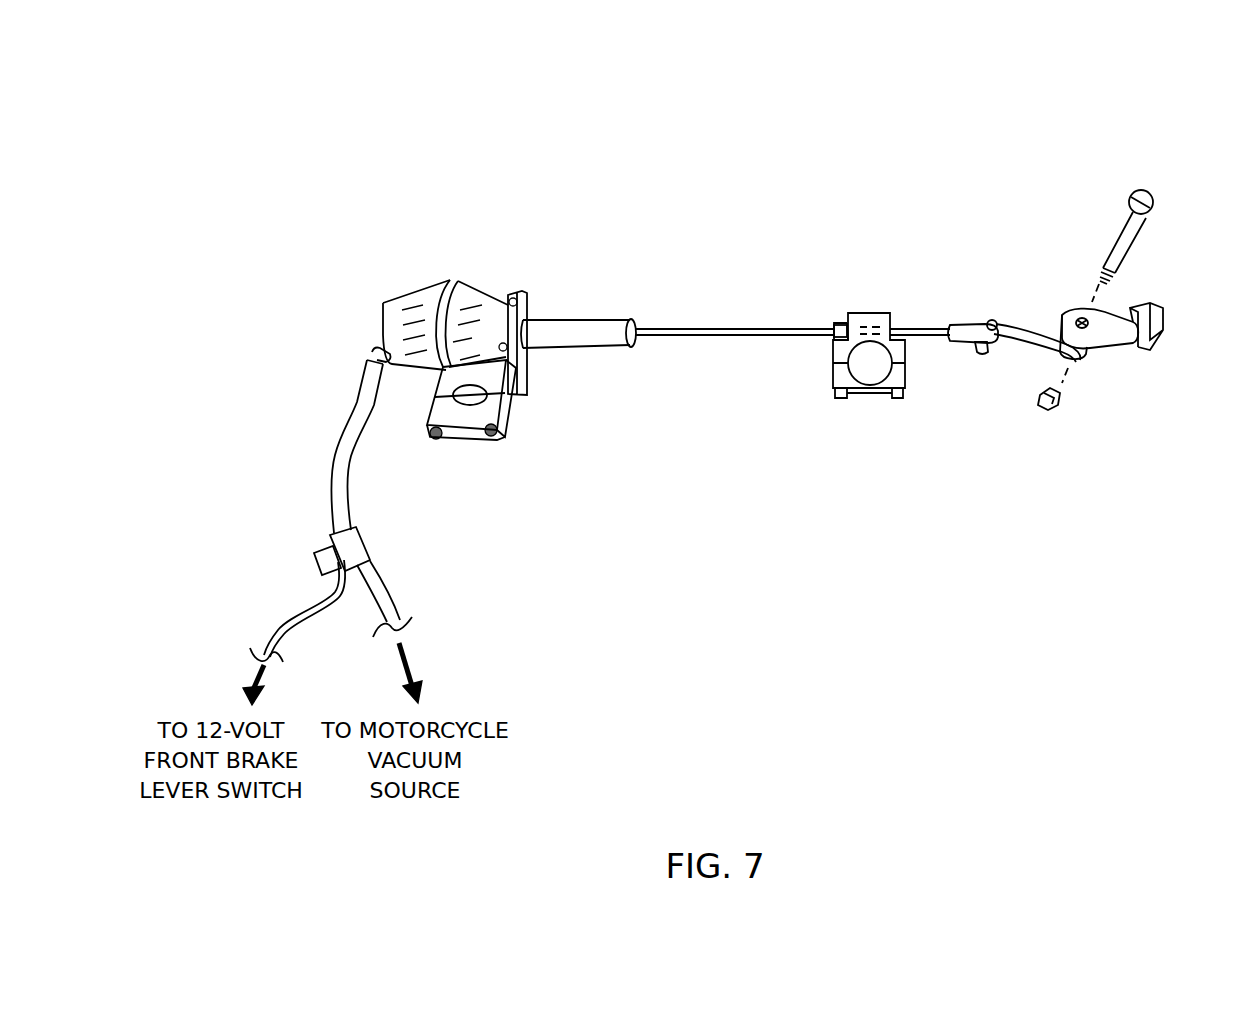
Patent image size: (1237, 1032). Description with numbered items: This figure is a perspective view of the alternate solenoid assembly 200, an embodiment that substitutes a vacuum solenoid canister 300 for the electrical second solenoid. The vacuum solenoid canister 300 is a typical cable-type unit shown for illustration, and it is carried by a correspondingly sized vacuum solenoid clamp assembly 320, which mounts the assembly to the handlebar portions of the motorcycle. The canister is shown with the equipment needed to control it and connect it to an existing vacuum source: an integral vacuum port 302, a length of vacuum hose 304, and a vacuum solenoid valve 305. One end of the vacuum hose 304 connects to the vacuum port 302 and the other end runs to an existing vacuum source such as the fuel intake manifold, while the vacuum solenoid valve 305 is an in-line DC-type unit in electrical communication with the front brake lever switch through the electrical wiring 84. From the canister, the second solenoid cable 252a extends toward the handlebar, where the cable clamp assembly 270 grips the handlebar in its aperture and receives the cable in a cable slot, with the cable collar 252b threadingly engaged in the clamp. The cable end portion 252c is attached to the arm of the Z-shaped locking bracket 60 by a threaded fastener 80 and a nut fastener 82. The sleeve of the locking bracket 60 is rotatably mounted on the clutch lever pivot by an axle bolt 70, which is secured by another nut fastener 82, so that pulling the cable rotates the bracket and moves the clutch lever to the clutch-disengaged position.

The alternate solenoid assembly 200 is at (963, 207).
The vacuum solenoid canister 300 is at (606, 329).
The vacuum port 302 is at (372, 350).
The vacuum hose 304 is at (345, 428).
The vacuum solenoid valve 305 is at (322, 546).
The electrical wiring 84 is at (285, 610).
The vacuum solenoid clamp assembly 320 is at (513, 399).
The second solenoid cable 252a is at (718, 327).
The cable collar 252b is at (838, 323).
The cable end portion 252c is at (945, 325).
The cable clamp assembly 270 is at (900, 381).
The locking bracket 60 is at (1086, 380).
The axle bolt 70 is at (1135, 235).
The nut fastener 82 is at (1052, 412).
The threaded fastener 80 is at (990, 355).